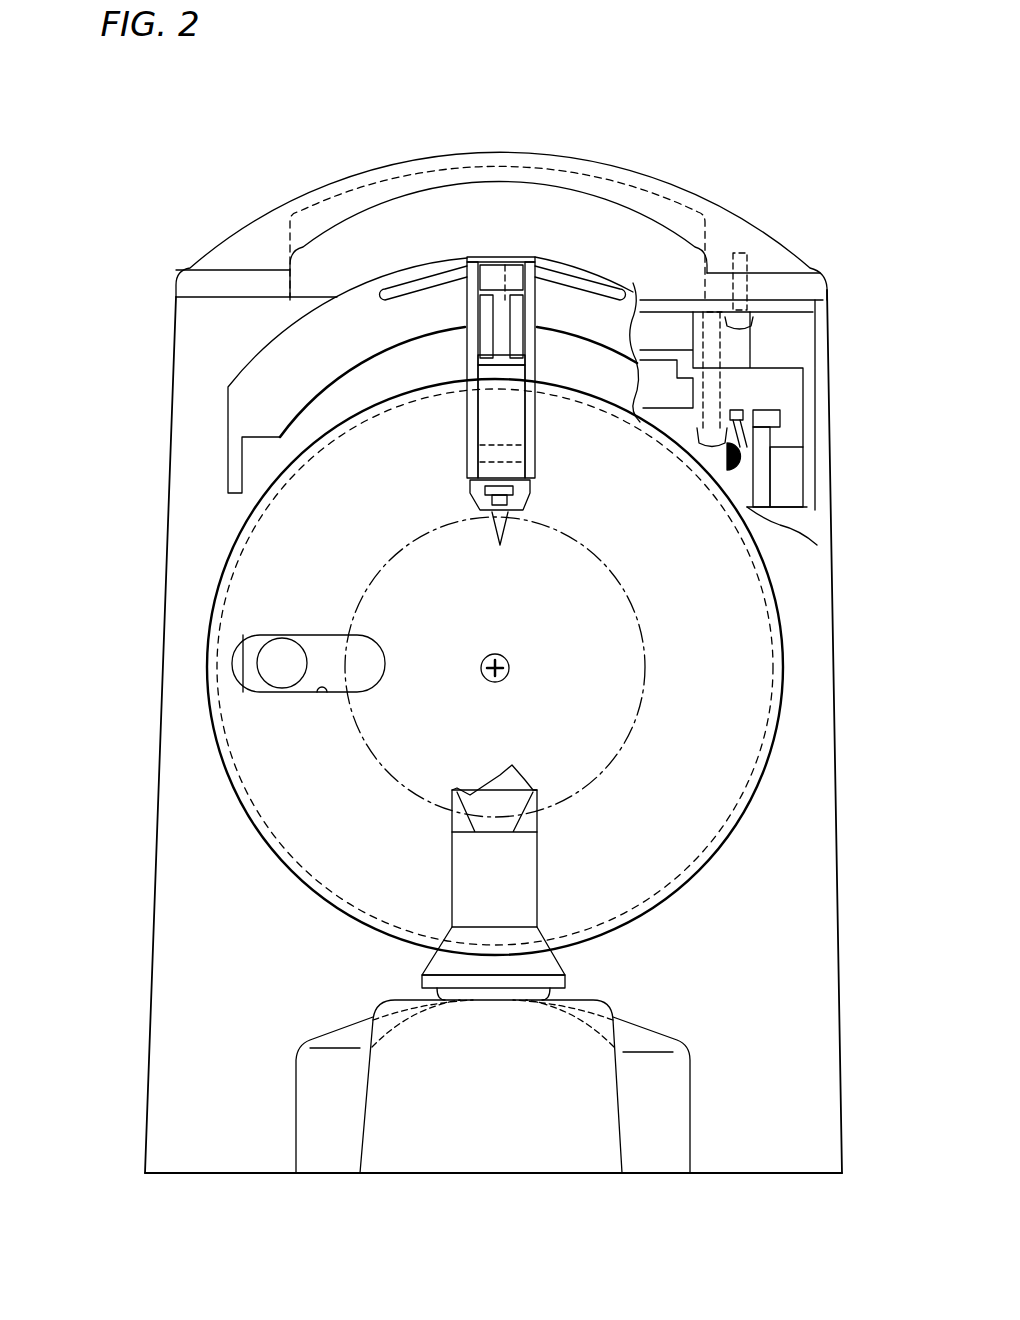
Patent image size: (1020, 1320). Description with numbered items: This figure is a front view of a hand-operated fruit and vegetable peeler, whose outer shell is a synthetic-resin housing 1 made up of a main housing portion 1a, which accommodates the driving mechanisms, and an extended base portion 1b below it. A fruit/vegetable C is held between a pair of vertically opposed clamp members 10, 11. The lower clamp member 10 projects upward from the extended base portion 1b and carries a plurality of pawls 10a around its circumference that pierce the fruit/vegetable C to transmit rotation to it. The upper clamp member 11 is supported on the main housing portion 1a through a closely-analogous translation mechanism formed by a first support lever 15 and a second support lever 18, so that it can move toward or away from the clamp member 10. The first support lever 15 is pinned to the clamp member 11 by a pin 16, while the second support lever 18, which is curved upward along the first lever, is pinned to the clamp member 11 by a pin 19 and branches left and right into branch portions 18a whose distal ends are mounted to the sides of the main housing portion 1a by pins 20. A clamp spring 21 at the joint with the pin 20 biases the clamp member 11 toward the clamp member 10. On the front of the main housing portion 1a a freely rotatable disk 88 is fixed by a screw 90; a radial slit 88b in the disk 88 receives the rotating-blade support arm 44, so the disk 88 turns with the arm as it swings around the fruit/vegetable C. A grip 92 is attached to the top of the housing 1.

The housing 1 is at (158, 352).
The main housing portion 1a is at (833, 625).
The extended base portion 1b is at (512, 1165).
The clamp member 10 is at (457, 873).
The pawls 10a is at (509, 762).
The clamp member 11 is at (515, 417).
The first support lever 15 is at (480, 260).
The pin 16 is at (507, 265).
The second support lever 18 is at (527, 277).
The branch portions 18a is at (273, 340).
The pin 19 is at (500, 467).
The pin 20 is at (783, 458).
The clamp spring 21 is at (763, 450).
The rotating-blade support arm 44 is at (270, 670).
The disk 88 is at (740, 750).
The slit 88b is at (322, 692).
The screw 90 is at (485, 680).
The grip 92 is at (703, 200).
The fruit/vegetable C is at (655, 615).